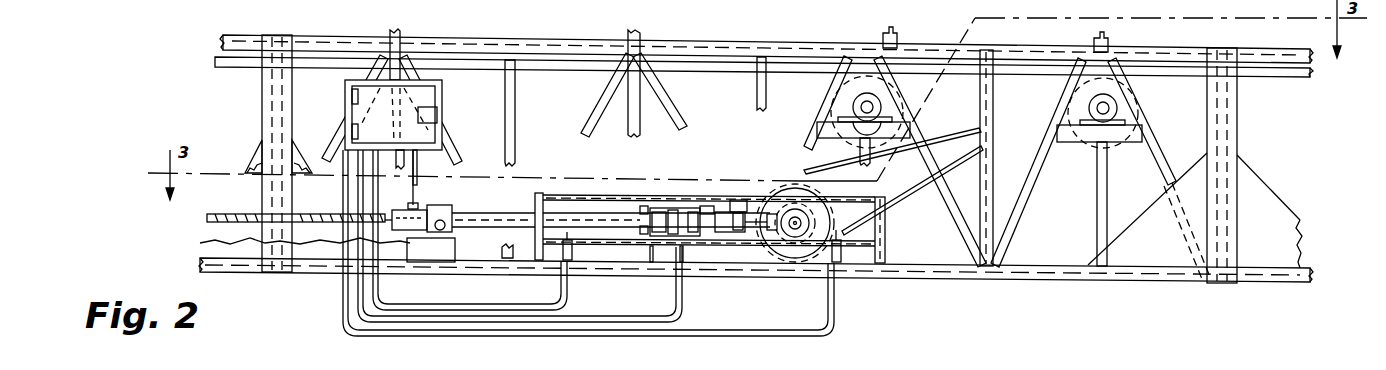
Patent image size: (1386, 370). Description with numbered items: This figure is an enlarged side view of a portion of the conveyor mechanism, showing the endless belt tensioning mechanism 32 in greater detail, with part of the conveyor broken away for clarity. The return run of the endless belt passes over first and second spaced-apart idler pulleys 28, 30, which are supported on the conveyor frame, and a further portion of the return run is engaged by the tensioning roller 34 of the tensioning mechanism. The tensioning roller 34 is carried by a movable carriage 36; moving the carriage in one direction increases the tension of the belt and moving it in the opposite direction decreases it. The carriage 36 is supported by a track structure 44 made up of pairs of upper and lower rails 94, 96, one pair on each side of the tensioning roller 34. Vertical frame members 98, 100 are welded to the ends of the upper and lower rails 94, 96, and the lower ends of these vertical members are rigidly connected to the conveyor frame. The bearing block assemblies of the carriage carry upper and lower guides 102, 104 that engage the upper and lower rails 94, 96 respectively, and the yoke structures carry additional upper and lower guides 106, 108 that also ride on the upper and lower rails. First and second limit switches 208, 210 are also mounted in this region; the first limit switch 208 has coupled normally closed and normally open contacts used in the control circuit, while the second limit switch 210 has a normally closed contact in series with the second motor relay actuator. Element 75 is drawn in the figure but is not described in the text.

The first idler pulley 28 is at (855, 90).
The second idler pulley 30 is at (1110, 97).
The endless belt tensioning mechanism 32 is at (338, 202).
The tensioning roller 34 is at (824, 192).
The movable carriage 36 is at (748, 192).
The track structure 44 is at (567, 190).
The drive shaft 75 is at (789, 231).
The upper rail 94 is at (656, 192).
The lower rail 96 is at (655, 264).
The vertical frame member 98 is at (885, 232).
The vertical frame member 100 is at (536, 195).
The upper guide 102 is at (820, 201).
The lower guide 104 is at (795, 235).
The upper guide 106 is at (740, 198).
The lower guide 108 is at (738, 232).
The first limit switch 208 is at (578, 258).
The second limit switch 210 is at (845, 268).